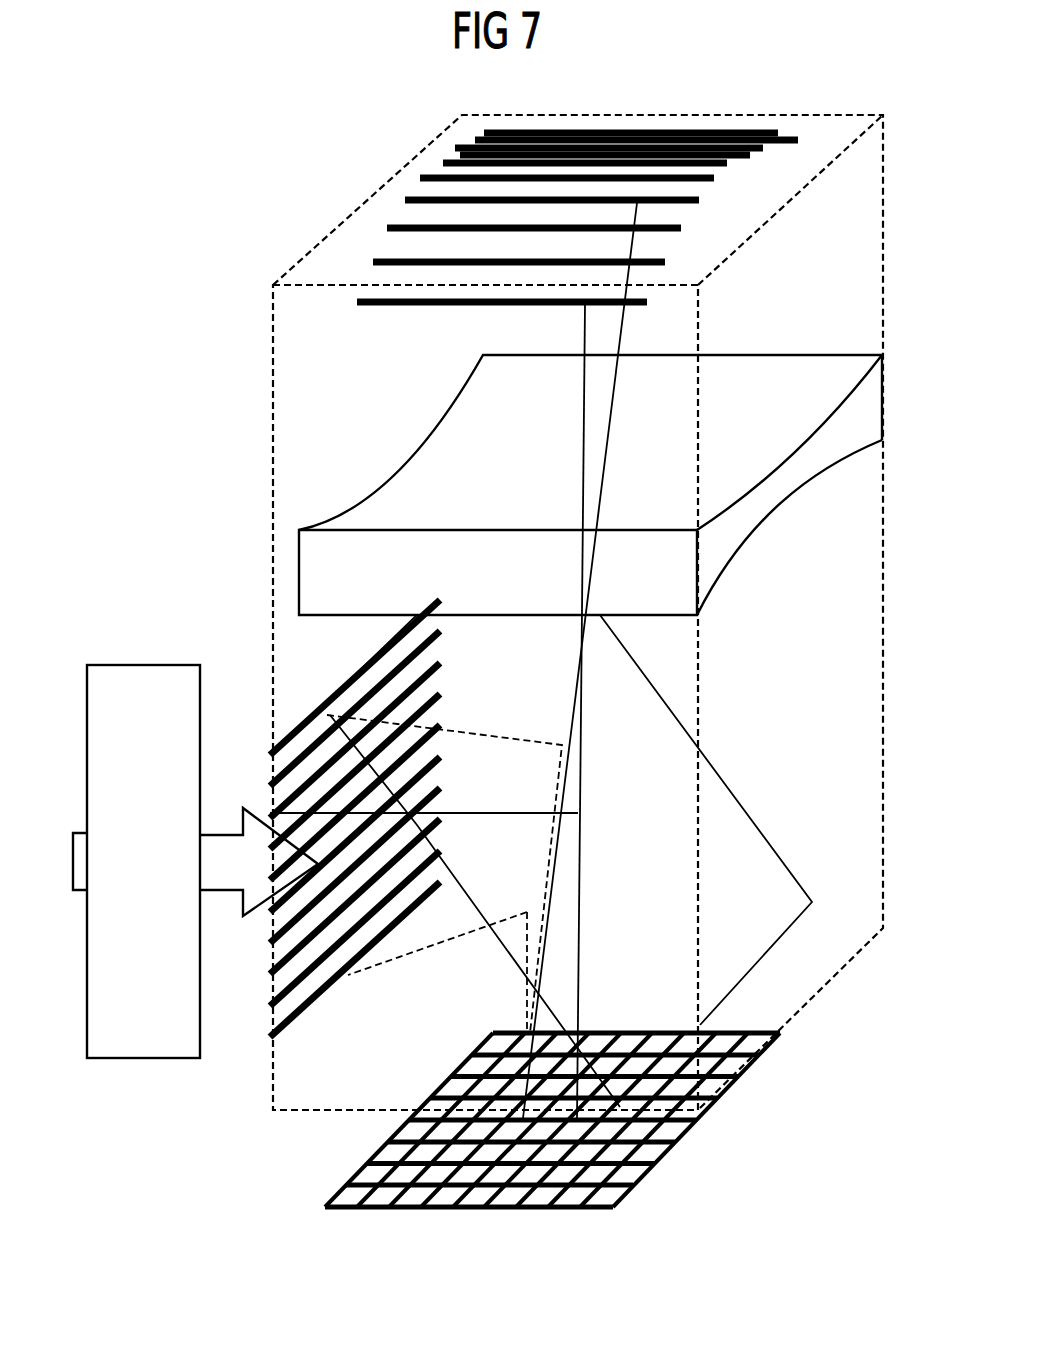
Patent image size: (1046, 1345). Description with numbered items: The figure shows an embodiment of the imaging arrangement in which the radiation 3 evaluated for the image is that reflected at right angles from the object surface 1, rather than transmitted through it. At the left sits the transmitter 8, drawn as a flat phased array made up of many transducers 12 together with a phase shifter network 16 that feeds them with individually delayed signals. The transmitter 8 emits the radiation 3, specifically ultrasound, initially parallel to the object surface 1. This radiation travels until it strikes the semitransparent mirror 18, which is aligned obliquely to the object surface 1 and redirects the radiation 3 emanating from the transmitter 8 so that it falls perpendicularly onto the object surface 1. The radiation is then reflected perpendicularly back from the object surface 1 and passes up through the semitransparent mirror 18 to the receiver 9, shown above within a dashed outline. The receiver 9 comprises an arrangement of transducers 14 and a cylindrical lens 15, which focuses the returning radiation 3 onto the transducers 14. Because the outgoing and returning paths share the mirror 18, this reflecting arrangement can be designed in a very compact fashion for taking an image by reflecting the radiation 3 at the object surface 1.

The object surface 1 is at (697, 1123).
The radiation 3 is at (619, 326).
The transmitter 8 is at (333, 647).
The receiver 9 is at (893, 115).
The transducers 12 is at (270, 963).
The transducers 14 is at (443, 163).
The cylindrical lens 15 is at (742, 537).
The phase shifter network 16 is at (150, 1060).
The semitransparent mirror 18 is at (727, 783).